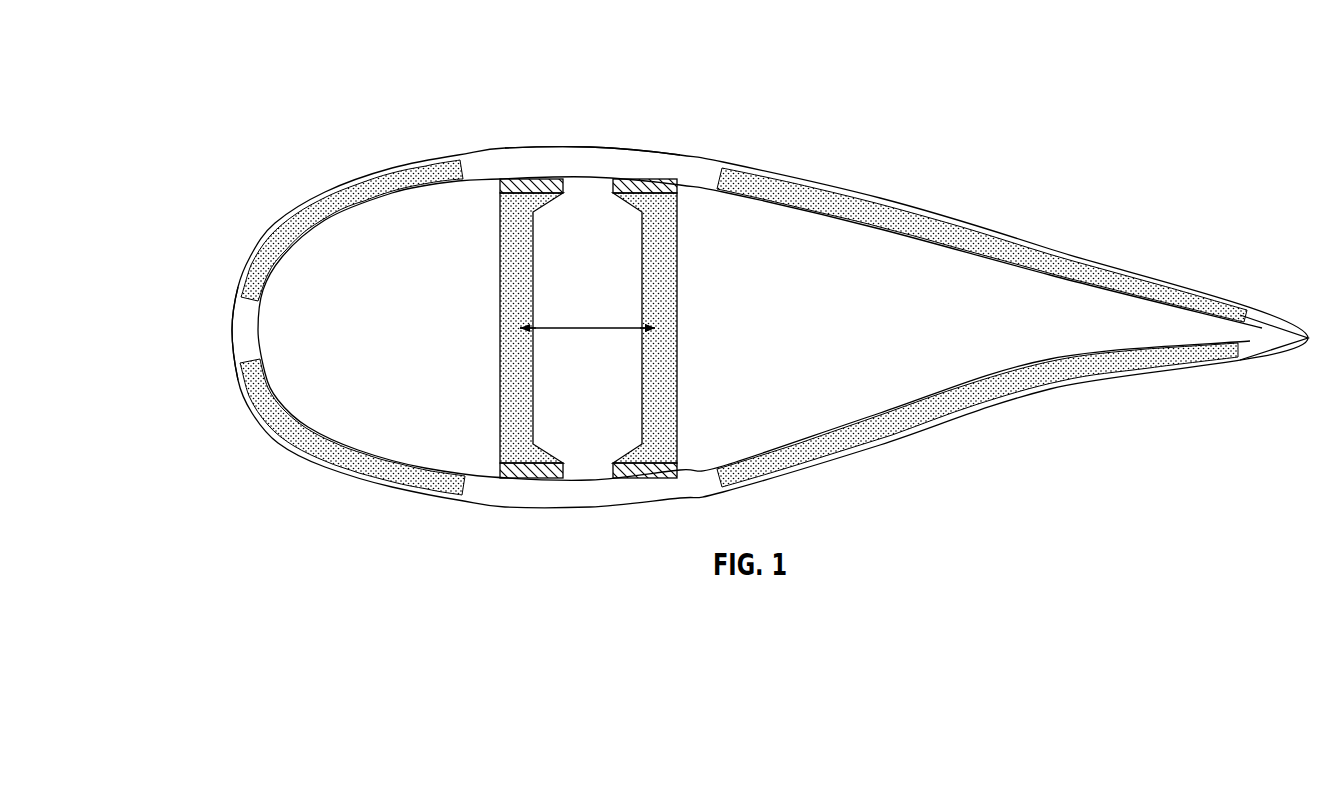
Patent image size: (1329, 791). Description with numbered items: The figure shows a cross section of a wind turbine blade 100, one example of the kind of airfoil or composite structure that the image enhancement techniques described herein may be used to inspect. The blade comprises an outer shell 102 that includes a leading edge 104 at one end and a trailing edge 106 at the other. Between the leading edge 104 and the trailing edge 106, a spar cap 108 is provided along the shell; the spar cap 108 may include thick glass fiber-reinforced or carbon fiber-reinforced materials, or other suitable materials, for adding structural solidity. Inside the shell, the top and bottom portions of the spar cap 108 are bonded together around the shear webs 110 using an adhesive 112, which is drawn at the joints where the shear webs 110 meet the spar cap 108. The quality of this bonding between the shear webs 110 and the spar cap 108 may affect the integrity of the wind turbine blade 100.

The wind turbine blade 100 is at (252, 70).
The outer shell 102 is at (1090, 256).
The leading edge 104 is at (246, 325).
The trailing edge 106 is at (1260, 335).
The spar cap 108 is at (578, 164).
The shear webs 110 is at (598, 330).
The adhesive 112 is at (502, 185).